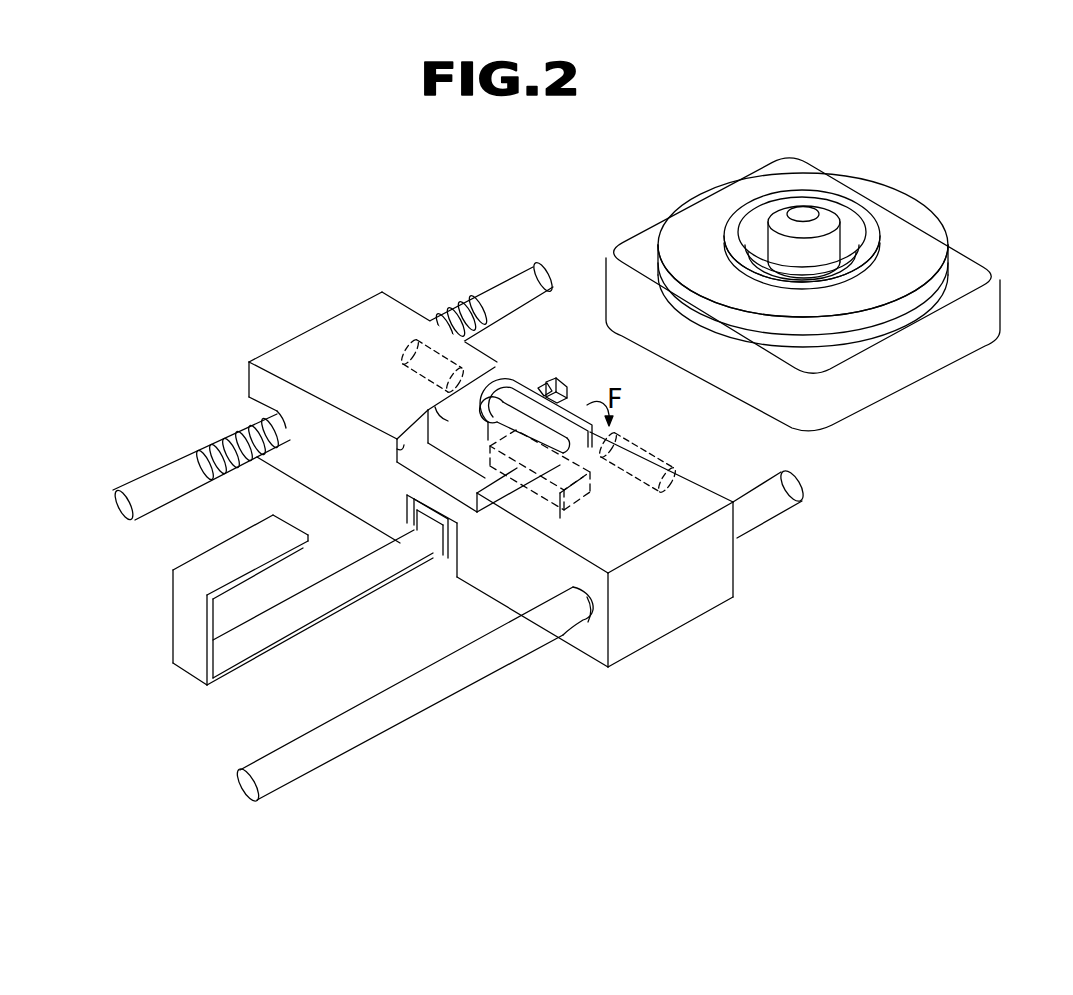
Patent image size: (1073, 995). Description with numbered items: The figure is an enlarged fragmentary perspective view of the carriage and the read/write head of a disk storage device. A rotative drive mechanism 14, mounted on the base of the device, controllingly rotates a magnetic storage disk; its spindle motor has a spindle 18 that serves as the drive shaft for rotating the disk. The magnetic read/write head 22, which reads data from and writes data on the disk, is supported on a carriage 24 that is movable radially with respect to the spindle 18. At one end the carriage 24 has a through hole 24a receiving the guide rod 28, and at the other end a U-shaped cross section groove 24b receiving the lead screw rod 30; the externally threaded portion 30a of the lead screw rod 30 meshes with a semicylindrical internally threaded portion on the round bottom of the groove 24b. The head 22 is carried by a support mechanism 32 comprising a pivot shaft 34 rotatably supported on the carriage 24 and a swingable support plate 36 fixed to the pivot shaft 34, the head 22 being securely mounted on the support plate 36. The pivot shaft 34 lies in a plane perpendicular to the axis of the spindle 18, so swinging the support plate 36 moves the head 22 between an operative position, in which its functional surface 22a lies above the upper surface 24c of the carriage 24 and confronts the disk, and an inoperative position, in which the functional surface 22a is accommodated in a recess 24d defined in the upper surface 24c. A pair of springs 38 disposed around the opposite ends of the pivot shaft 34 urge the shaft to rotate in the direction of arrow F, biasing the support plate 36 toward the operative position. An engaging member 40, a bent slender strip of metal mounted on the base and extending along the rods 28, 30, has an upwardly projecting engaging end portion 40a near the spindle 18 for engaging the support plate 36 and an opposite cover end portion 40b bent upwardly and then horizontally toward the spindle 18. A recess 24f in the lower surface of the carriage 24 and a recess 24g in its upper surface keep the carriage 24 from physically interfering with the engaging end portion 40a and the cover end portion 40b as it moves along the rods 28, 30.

The rotative drive mechanism 14 is at (975, 213).
The spindle 18 is at (812, 213).
The magnetic read/write head 22 is at (556, 405).
The functional surface 22a is at (563, 394).
The carriage 24 is at (688, 617).
The through hole 24a is at (583, 622).
The U-shaped cross section groove 24b is at (274, 407).
The upper surface 24c is at (670, 521).
The recess 24d is at (427, 400).
The recess 24f is at (415, 507).
The recess 24g is at (395, 446).
The guide rod 28 is at (370, 740).
The lead screw rod 30 is at (503, 292).
The externally threaded portion 30a is at (217, 435).
The support mechanism 32 is at (567, 343).
The pivot shaft 34 is at (690, 485).
The swingable support plate 36 is at (500, 384).
The springs 38 is at (413, 347).
The engaging member 40 is at (302, 641).
The engaging end portion 40a is at (433, 540).
The cover end portion 40b is at (242, 548).